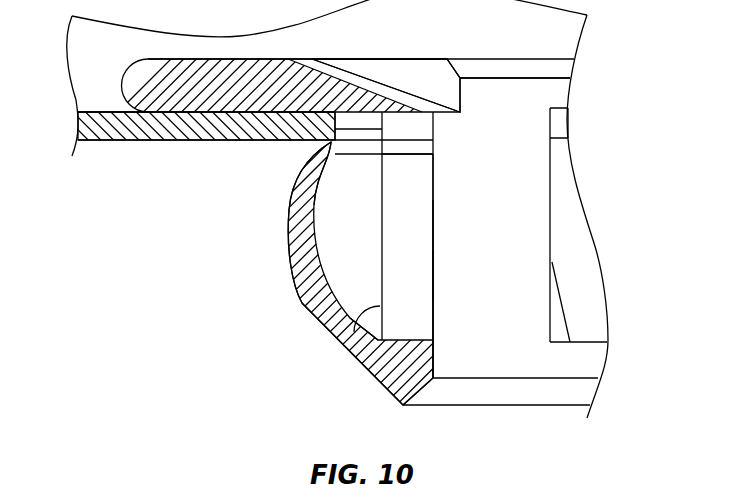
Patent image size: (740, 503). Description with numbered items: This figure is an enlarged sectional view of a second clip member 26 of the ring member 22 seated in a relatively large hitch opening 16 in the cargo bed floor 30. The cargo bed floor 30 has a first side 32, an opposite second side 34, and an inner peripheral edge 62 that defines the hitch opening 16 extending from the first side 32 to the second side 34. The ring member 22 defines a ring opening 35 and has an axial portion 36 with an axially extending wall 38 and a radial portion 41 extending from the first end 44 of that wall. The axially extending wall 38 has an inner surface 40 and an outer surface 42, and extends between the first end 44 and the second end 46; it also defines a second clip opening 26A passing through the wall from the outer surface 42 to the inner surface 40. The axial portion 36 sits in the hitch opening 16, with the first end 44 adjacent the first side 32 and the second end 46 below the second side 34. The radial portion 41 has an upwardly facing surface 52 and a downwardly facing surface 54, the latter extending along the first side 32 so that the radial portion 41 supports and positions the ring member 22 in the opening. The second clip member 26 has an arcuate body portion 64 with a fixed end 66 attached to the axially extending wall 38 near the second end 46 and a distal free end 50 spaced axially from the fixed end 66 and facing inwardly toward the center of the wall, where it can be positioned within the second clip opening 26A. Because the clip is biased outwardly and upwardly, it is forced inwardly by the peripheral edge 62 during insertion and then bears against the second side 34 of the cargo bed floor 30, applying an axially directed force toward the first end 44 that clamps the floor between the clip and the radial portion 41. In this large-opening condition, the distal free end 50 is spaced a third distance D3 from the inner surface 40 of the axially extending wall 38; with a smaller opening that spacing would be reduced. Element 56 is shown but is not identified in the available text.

The hitch opening 16 is at (338, 122).
The ring member 22 is at (470, 70).
The second clip member 26 is at (302, 303).
The second clip opening 26A is at (420, 209).
The cargo bed floor 30 is at (103, 142).
The first side 32 is at (99, 113).
The second side 34 is at (167, 142).
The ring opening 35 is at (433, 165).
The axial portion 36 is at (527, 128).
The axially extending wall 38 is at (433, 257).
The inner surface 40 is at (433, 291).
The radial portion 41 is at (257, 72).
The outer surface 42 is at (340, 337).
The first end 44 is at (518, 57).
The second end 46 is at (517, 405).
The distal free end 50 is at (328, 142).
The upwardly facing surface 52 is at (200, 59).
The downwardly facing surface 54 is at (219, 113).
The retainer 56 is at (413, 72).
The inner peripheral edge 62 is at (382, 129).
The body portion 64 is at (297, 233).
The fixed end 66 is at (402, 405).
The third distance D3 is at (383, 157).